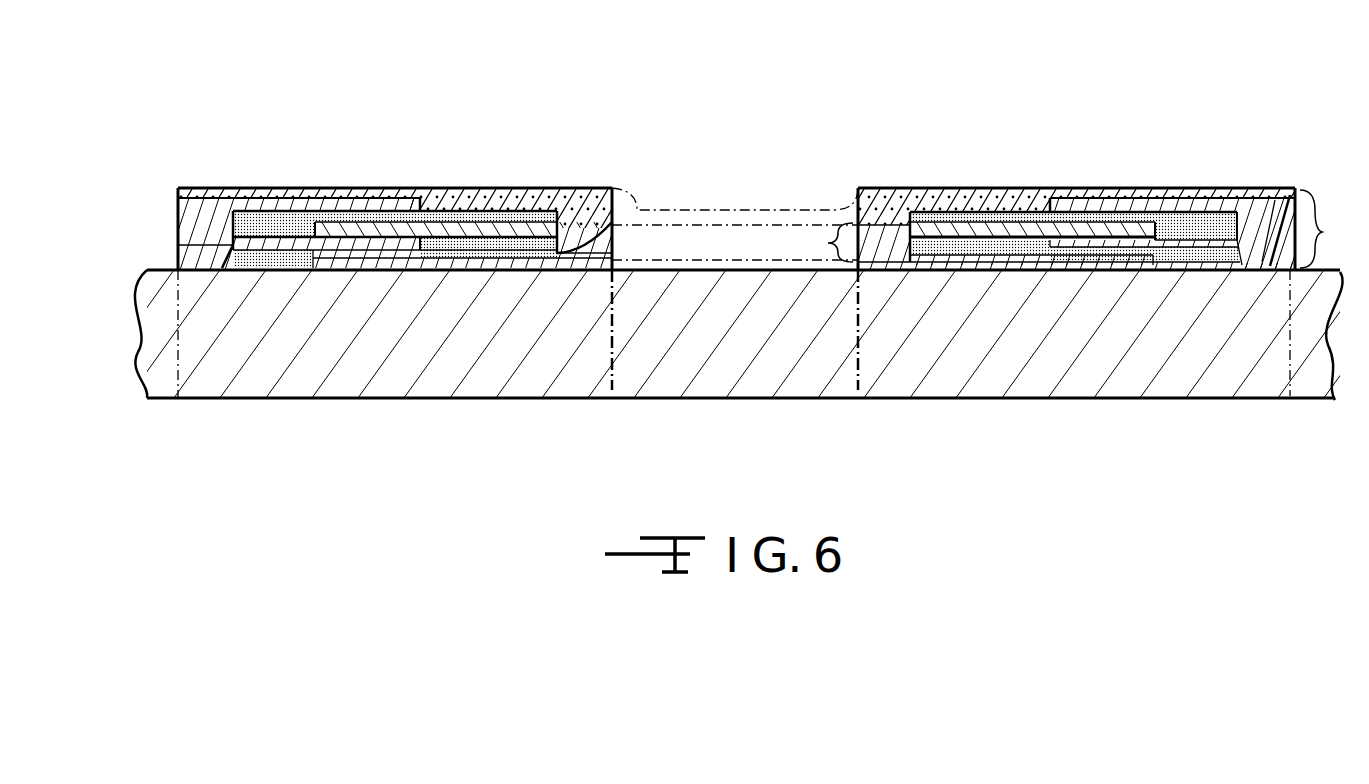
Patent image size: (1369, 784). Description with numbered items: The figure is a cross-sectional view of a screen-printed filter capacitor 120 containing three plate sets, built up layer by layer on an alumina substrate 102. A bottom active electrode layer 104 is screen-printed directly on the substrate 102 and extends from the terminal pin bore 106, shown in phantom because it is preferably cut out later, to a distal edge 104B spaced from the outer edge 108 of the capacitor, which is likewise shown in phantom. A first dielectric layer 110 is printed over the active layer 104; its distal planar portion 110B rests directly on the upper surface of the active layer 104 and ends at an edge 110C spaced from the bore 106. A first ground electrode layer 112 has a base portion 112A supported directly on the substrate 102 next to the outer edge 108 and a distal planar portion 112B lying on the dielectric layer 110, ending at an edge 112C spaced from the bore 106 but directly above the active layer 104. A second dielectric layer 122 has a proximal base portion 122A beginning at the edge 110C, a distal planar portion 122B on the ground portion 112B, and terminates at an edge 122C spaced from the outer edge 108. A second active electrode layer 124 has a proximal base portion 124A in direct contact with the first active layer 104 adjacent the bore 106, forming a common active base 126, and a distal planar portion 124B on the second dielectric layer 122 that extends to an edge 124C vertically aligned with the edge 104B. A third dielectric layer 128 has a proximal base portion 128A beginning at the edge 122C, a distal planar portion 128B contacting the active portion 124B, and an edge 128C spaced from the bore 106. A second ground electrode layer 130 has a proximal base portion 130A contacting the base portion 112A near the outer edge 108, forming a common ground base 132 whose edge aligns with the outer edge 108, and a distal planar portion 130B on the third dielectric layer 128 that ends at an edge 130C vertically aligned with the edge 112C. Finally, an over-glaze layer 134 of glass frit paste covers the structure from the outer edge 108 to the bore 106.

The substrate 102 is at (1200, 355).
The bottom active electrode layer 104 is at (520, 270).
The distal edge of bottom active electrode layer 104B is at (265, 262).
The terminal pin bore 106 is at (858, 328).
The outer edge of the capacitor 108 is at (178, 365).
The dielectric layer 110 is at (1110, 267).
The distal planar portion of first dielectric layer 110B is at (463, 268).
The edge of first dielectric layer 110C is at (600, 255).
The ground electrode layer 112 is at (1265, 255).
The base portion of first ground electrode layer 112A is at (182, 256).
The distal planar portion of first ground electrode layer 112B is at (343, 268).
The edge of first ground electrode layer 112C is at (488, 232).
The screen-printed filter capacitor 120 is at (902, 91).
The second dielectric layer 122 is at (1003, 233).
The proximal base portion of second dielectric layer 122A is at (583, 243).
The distal planar portion of second dielectric layer 122B is at (347, 237).
The edge of second dielectric layer 122C is at (233, 240).
The second active electrode layer 124 is at (762, 240).
The proximal base portion of second active electrode layer 124A is at (585, 248).
The distal planar portion of second active electrode layer 124B is at (503, 217).
The edge of second active electrode layer 124C is at (305, 230).
The common active base 126 is at (735, 225).
The third dielectric layer 128 is at (1175, 222).
The proximal base portion of third dielectric layer 128A is at (222, 190).
The distal planar portion of third dielectric layer 128B is at (438, 213).
The edge of third dielectric layer 128C is at (570, 217).
The second ground electrode layer 130 is at (1258, 222).
The proximal base portion of second ground electrode layer 130A is at (193, 208).
The distal planar portion of second ground electrode layer 130B is at (290, 206).
The edge of second ground electrode layer 130C is at (455, 213).
The common ground base 132 is at (1329, 229).
The over-glaze layer 134 is at (736, 212).